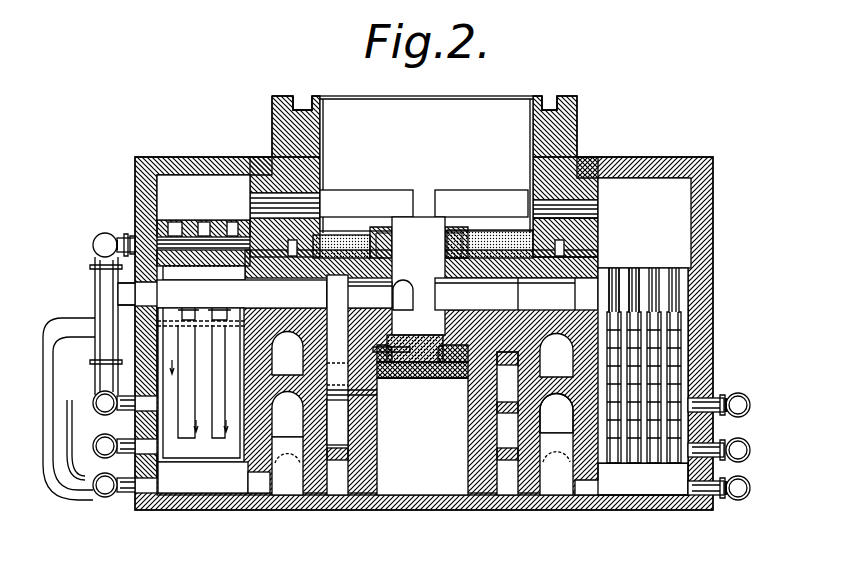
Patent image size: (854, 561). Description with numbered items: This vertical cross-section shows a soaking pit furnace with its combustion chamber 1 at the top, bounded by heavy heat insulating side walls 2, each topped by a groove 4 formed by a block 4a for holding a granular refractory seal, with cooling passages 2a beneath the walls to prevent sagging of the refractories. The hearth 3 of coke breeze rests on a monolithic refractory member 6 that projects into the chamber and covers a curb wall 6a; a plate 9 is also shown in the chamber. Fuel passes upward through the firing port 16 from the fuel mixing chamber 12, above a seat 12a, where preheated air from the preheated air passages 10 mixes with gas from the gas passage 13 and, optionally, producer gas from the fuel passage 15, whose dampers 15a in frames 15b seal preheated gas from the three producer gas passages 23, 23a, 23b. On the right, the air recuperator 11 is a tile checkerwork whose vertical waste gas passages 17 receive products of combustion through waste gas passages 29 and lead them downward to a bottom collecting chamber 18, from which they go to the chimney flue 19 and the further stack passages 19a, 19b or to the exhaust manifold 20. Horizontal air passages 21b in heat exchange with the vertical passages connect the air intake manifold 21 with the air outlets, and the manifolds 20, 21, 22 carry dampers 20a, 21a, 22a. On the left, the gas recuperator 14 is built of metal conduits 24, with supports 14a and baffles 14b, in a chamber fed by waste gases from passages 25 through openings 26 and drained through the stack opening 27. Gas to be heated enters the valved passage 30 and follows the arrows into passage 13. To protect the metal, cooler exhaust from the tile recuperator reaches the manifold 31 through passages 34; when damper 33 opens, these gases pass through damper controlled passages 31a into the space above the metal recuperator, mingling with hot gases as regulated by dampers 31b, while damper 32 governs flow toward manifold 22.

The combustion chamber 1 is at (444, 156).
The heat insulating side walls 2 is at (580, 137).
The cooling passages 2a is at (560, 252).
The hearth 3 is at (474, 240).
The groove 4 is at (552, 96).
The block 4a is at (304, 98).
The monolithic refractory member 6 is at (372, 236).
The curb wall 6a is at (392, 386).
The plate 9 is at (466, 200).
The preheated air passages 10 is at (516, 294).
The air recuperator 11 is at (654, 290).
The fuel mixing chamber 12 is at (428, 309).
The valve seat 12a is at (430, 378).
The gas passage 13 is at (316, 301).
The gas recuperator 14 is at (182, 268).
The baffle support 14a is at (188, 310).
The baffle 14b is at (190, 340).
The fuel passage 15 is at (342, 310).
The dampers 15a is at (352, 420).
The frames 15b is at (378, 402).
The firing port 16 is at (434, 232).
The vertical waste gas passages 17 is at (640, 272).
The bottom collecting chamber 18 is at (648, 492).
The chimney flue 19 is at (298, 492).
The stack passage 19a is at (563, 429).
The stack passage 19b is at (563, 369).
The exhaust manifold 20 is at (742, 498).
The damper 20a is at (728, 480).
The air intake manifold 21 is at (752, 453).
The damper 21a is at (514, 434).
The horizontal air passages 21b is at (630, 458).
The manifold 22 is at (750, 408).
The damper 22a is at (728, 396).
The producer gas passage 23 is at (514, 486).
The producer gas passage 23a is at (350, 452).
The producer gas passage 23b is at (514, 392).
The metal conduits 24 is at (180, 458).
The waste gas passages 25 is at (285, 206).
The openings 26 is at (200, 212).
The stack opening 27 is at (250, 486).
The waste gas passages 29 is at (590, 216).
The valved passage 30 is at (98, 292).
The manifold 31 is at (93, 240).
The damper controlled passages 31a is at (116, 240).
The dampers 31b is at (132, 234).
The damper 32 is at (88, 362).
The damper 33 is at (90, 266).
The passages 34 is at (60, 324).